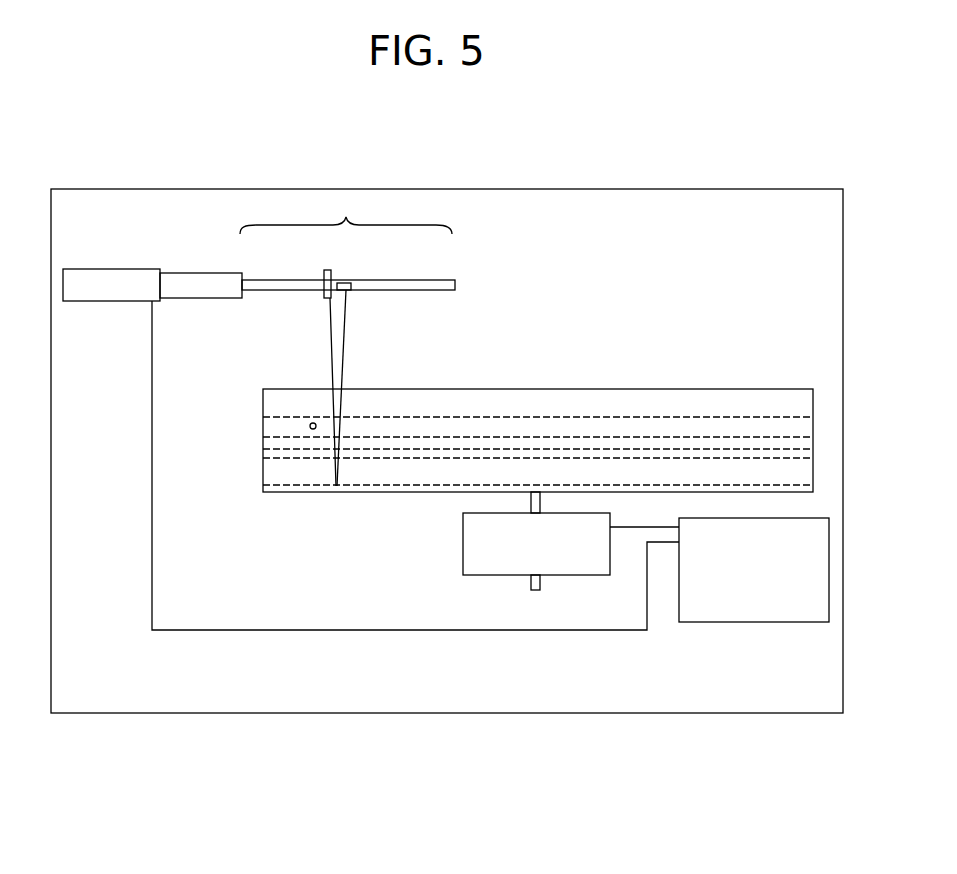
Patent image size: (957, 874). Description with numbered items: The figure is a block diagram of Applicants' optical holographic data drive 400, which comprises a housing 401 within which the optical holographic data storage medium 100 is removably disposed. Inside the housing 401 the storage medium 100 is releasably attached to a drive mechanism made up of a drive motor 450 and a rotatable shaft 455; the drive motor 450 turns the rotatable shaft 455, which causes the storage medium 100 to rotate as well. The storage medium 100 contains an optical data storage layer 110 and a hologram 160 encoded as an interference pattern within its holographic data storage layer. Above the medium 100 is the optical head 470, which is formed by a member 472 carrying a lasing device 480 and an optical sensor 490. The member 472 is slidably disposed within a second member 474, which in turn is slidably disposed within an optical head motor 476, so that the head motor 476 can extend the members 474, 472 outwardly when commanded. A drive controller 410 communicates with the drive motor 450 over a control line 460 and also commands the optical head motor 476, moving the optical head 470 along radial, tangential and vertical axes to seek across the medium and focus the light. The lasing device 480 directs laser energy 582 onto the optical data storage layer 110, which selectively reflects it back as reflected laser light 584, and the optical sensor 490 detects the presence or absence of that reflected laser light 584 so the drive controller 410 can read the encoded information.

The optical holographic data storage medium 100 is at (701, 386).
The optical data storage layer 110 is at (311, 487).
The hologram 160 is at (312, 423).
The optical holographic data drive 400 is at (430, 734).
The housing 401 is at (641, 713).
The drive controller 410 is at (766, 624).
The drive motor 450 is at (518, 554).
The rotatable shaft 455 is at (531, 503).
The control line 460 is at (620, 525).
The optical head 470 is at (346, 215).
The member 472 is at (455, 285).
The member 474 is at (186, 295).
The optical head motor 476 is at (97, 295).
The lasing device 480 is at (324, 276).
The optical sensor 490 is at (345, 283).
The laser energy 582 is at (330, 326).
The reflected laser light 584 is at (344, 350).